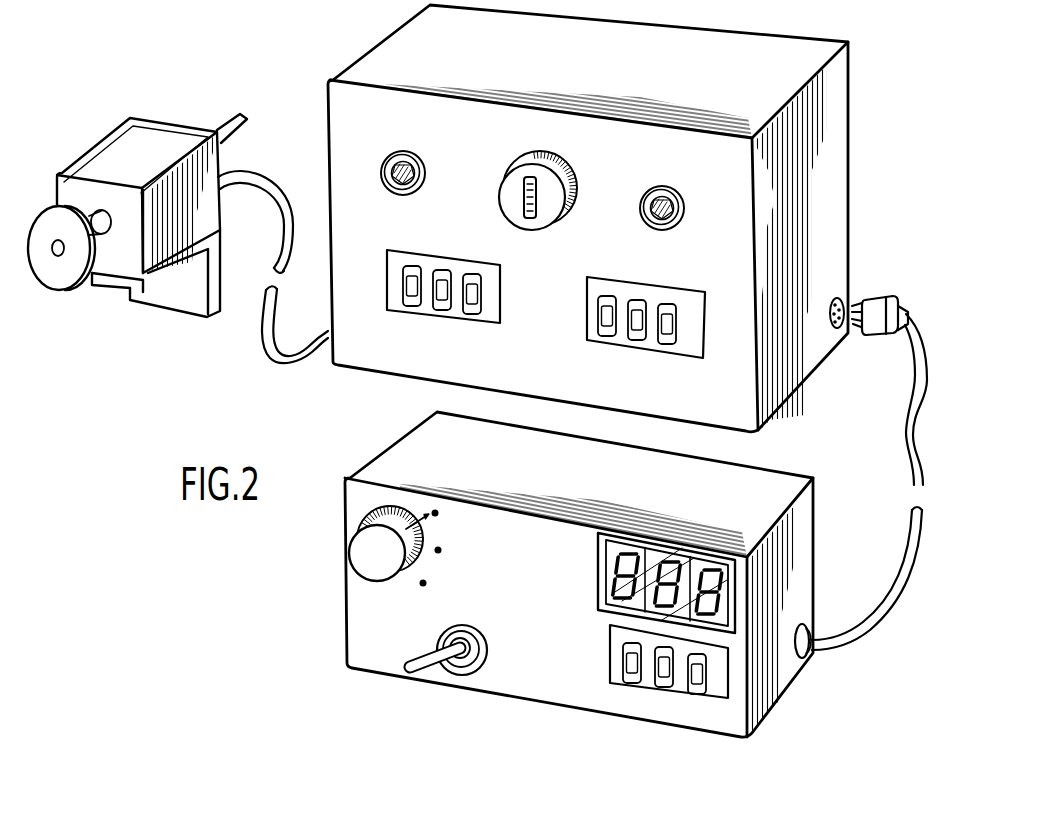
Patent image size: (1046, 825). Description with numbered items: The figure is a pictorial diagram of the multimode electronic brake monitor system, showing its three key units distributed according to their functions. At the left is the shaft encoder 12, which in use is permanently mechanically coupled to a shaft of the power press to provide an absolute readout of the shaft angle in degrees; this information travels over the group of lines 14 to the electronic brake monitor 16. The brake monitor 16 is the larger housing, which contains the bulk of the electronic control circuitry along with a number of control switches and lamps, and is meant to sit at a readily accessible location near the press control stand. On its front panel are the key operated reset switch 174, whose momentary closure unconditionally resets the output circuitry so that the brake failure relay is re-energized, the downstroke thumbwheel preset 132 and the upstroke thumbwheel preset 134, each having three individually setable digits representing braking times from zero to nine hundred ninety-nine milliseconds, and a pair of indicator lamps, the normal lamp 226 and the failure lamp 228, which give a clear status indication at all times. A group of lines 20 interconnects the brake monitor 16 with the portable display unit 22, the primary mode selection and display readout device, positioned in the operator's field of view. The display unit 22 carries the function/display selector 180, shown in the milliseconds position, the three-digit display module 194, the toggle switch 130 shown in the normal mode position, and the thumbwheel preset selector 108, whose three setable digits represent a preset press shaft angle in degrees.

The shaft encoder 12 is at (146, 124).
The plurality of lines 14 is at (283, 232).
The electronic brake monitor 16 is at (386, 27).
The plurality of lines 20 is at (907, 311).
The portable display unit 22 is at (340, 644).
The thumbwheel preset selector 108 is at (721, 698).
The toggle switch 130 is at (452, 672).
The downstroke thumbwheel preset 132 is at (385, 290).
The upstroke thumbwheel preset 134 is at (586, 291).
The key operated reset switch 174 is at (503, 207).
The function/display selector 180 is at (360, 543).
The display module 194 is at (654, 548).
The normal lamp 226 is at (392, 187).
The failure lamp 228 is at (672, 222).